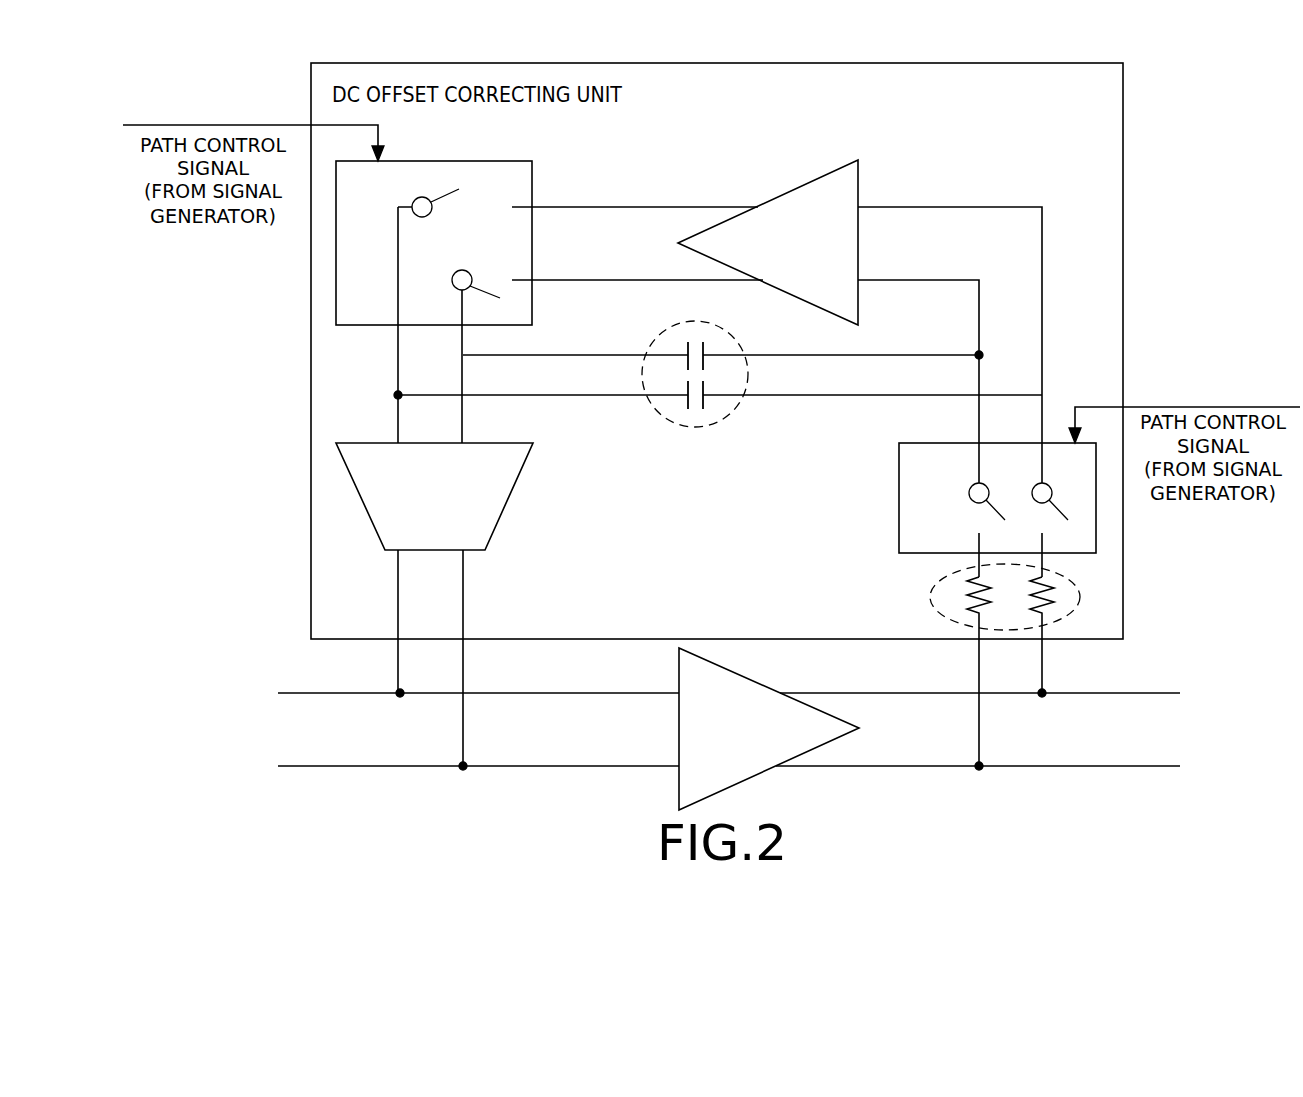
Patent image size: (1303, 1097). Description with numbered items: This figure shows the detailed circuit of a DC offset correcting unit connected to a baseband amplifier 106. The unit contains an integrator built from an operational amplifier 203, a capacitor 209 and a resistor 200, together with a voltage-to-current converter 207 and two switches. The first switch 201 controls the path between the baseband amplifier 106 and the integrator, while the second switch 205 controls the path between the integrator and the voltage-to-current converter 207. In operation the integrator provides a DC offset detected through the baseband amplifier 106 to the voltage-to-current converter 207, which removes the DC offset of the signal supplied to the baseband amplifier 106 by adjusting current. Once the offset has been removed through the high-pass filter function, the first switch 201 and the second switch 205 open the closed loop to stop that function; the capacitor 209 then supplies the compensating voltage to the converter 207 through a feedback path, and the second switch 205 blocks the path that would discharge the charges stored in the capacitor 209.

The second switch 205 is at (535, 172).
The operational amplifier 203 is at (768, 242).
The capacitor 209 is at (682, 427).
The voltage-to-current converter 207 is at (434, 496).
The first switch 201 is at (899, 497).
The resistor 200 is at (1078, 583).
The baseband amplifier 106 is at (735, 667).